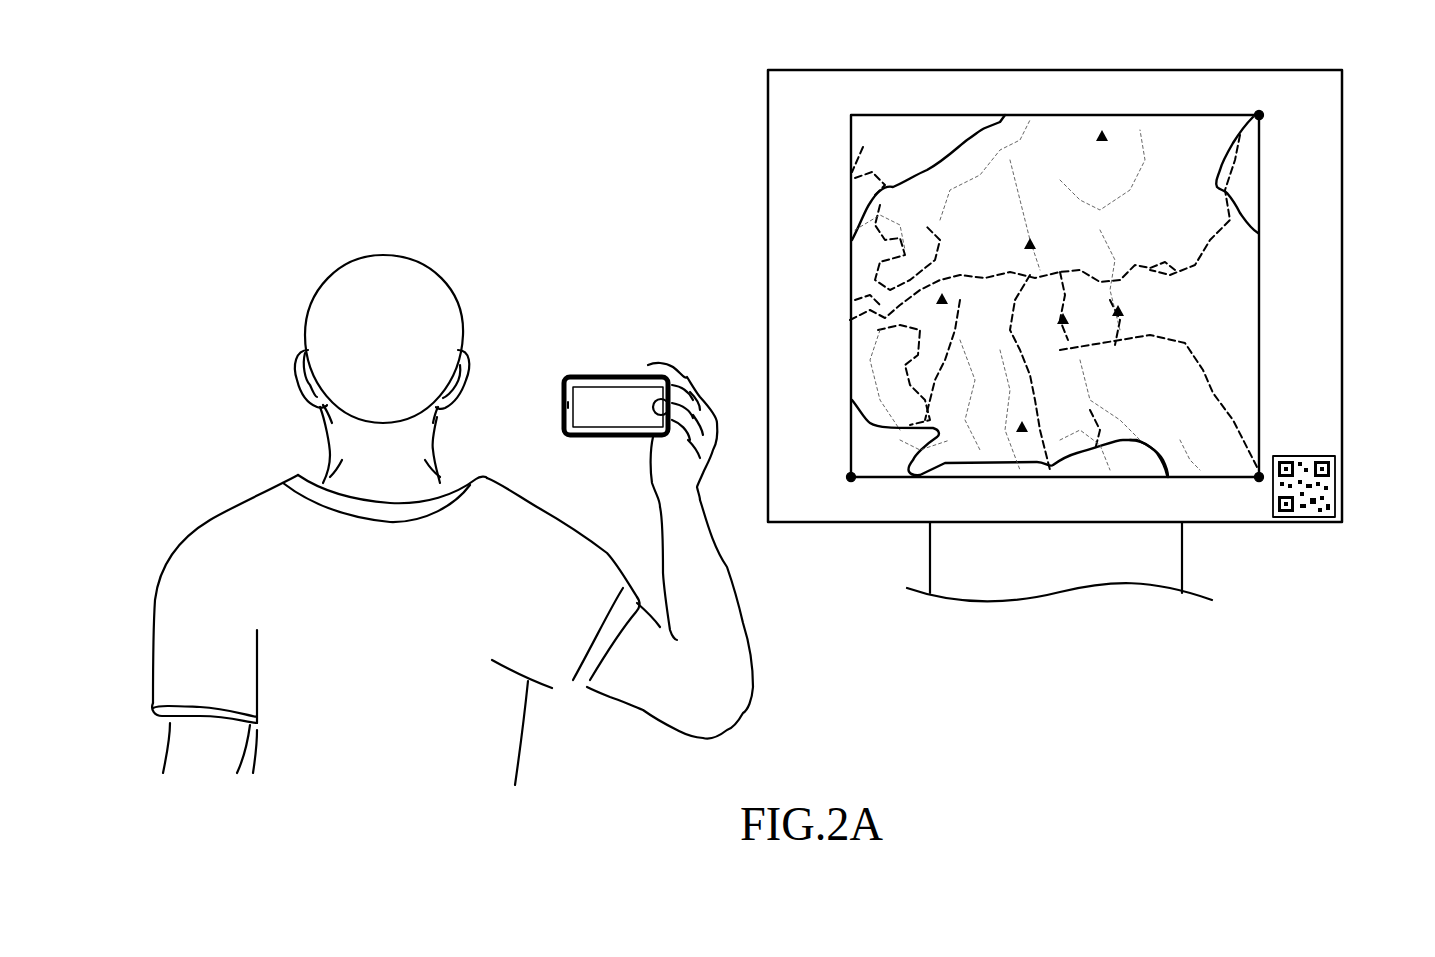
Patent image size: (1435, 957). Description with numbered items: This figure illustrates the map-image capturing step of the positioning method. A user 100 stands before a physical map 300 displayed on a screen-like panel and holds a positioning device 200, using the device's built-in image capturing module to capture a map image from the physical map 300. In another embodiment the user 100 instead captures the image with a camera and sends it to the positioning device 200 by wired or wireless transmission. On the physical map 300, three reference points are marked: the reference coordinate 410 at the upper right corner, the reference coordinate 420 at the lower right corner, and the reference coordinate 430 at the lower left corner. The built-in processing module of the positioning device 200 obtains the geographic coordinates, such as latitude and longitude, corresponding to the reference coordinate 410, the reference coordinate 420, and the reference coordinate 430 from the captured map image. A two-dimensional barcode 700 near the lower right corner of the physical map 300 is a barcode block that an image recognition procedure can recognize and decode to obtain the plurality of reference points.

The user 100 is at (325, 292).
The positioning device 200 is at (593, 380).
The physical map 300 is at (1317, 105).
The reference coordinate 410 is at (1263, 117).
The reference coordinate 420 is at (1259, 482).
The reference coordinate 430 is at (851, 482).
The two-dimensional barcode 700 is at (1300, 514).